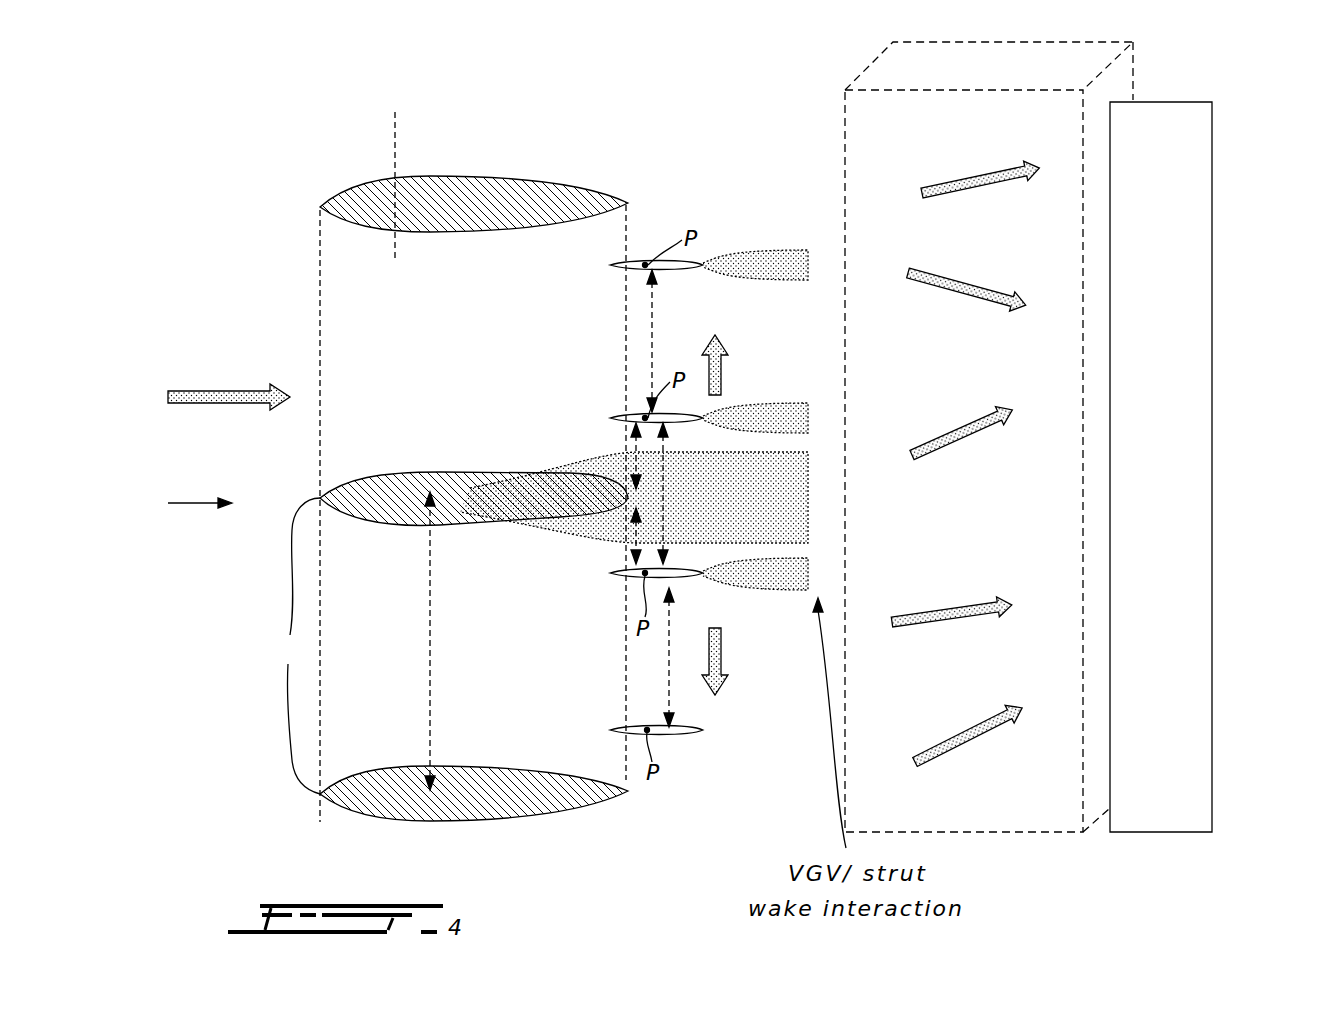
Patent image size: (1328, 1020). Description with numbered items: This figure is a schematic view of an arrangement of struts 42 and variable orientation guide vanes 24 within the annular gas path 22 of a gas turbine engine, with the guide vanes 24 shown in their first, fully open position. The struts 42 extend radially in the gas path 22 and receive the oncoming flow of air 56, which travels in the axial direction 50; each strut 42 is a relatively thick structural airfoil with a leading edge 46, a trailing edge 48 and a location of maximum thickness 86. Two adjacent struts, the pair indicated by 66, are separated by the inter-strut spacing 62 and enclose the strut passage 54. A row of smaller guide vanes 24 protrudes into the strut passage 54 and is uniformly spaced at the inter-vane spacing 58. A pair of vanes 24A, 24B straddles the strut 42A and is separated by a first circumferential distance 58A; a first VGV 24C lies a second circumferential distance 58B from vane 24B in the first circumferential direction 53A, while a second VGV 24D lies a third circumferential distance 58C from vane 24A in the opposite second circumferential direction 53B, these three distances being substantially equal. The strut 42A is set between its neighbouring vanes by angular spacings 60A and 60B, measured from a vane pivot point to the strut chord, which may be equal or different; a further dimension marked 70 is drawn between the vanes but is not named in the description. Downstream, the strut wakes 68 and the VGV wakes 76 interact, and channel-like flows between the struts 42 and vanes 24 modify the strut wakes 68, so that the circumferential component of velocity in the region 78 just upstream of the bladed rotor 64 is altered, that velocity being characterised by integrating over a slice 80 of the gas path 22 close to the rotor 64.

The annular gas path 22 is at (777, 102).
The variable orientation guide vanes 24 is at (608, 175).
The first VGV of the straddling pair 24A is at (612, 573).
The second VGV of the straddling pair 24B is at (628, 412).
The first VGV 24C is at (645, 262).
The second VGV 24D is at (690, 735).
The struts 42 is at (590, 858).
The strut 42A is at (395, 472).
The leading edge 46 is at (320, 207).
The trailing edge 48 is at (628, 205).
The axial direction 50 is at (190, 508).
The first circumferential direction 53A is at (722, 380).
The second circumferential direction 53B is at (722, 662).
The strut passage 54 is at (368, 345).
The flow of air 56 is at (210, 390).
The inter-vane spacing 58 is at (712, 341).
The first circumferential distance 58A is at (540, 443).
The second circumferential distance 58B is at (652, 330).
The third circumferential distance 58C is at (669, 693).
The strut-vane spacing 60A is at (636, 445).
The angular spacing 60B is at (636, 540).
The inter-strut spacing 62 is at (430, 665).
The bladed rotor 64 is at (1212, 248).
The pair of adjacent struts 66 is at (265, 483).
The strut wakes 68 is at (808, 500).
The vane pitch 70 is at (605, 530).
The VGV wakes 76 is at (738, 252).
The region 78 is at (1058, 802).
The slice 80 is at (1077, 40).
The location of maximum thickness 86 is at (395, 138).